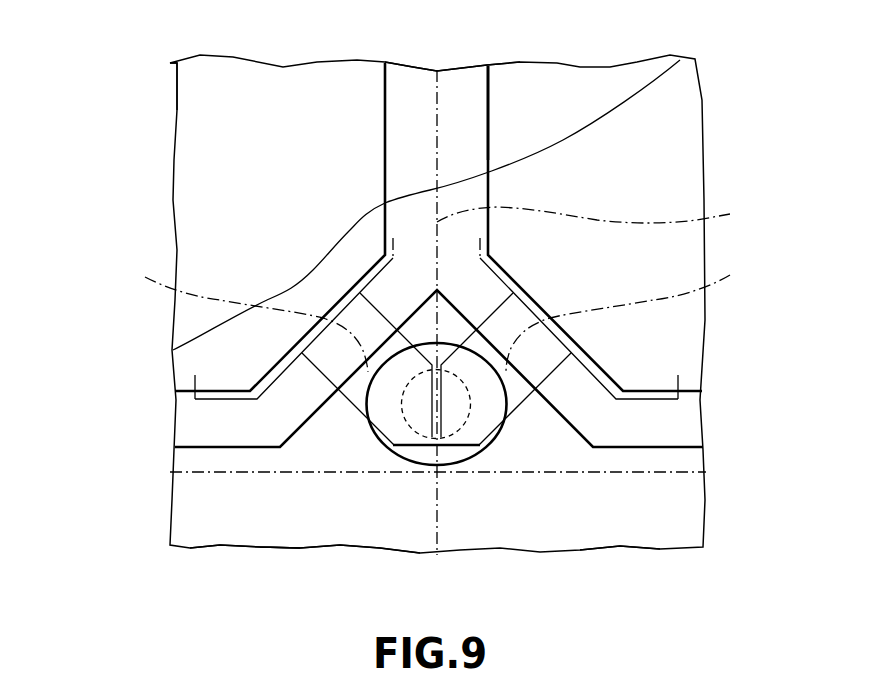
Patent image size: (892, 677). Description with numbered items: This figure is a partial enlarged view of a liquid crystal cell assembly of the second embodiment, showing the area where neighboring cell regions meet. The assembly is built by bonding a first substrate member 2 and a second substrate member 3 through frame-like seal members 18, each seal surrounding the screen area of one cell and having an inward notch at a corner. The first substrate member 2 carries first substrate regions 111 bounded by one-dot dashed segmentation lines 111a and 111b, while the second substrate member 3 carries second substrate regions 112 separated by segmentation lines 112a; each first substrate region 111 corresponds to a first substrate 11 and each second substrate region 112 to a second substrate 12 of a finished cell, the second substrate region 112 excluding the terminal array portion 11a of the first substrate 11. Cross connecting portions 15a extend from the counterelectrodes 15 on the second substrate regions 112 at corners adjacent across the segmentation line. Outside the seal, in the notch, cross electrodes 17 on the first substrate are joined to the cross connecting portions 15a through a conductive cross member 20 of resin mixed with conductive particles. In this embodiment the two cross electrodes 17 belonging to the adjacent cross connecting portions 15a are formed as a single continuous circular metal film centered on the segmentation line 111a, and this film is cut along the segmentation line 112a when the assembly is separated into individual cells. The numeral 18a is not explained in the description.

The first substrate member 2 is at (708, 499).
The second substrate member 3 is at (177, 108).
The first substrate 11 is at (436, 453).
The terminal array portion 11a is at (223, 517).
The second substrate 12 is at (304, 132).
The counterelectrode 15 is at (210, 400).
The cross connecting portion 15a is at (433, 311).
The cross electrode 17 is at (415, 418).
The frame-like seal member 18 is at (265, 432).
The step portion edge 18a is at (475, 125).
The conductive cross member 20 is at (422, 453).
The first substrate region 111 is at (187, 363).
The segmentation line 111a is at (612, 214).
The segmentation line 111b is at (203, 473).
The second substrate region 112 is at (195, 162).
The segmentation line 112a is at (435, 135).